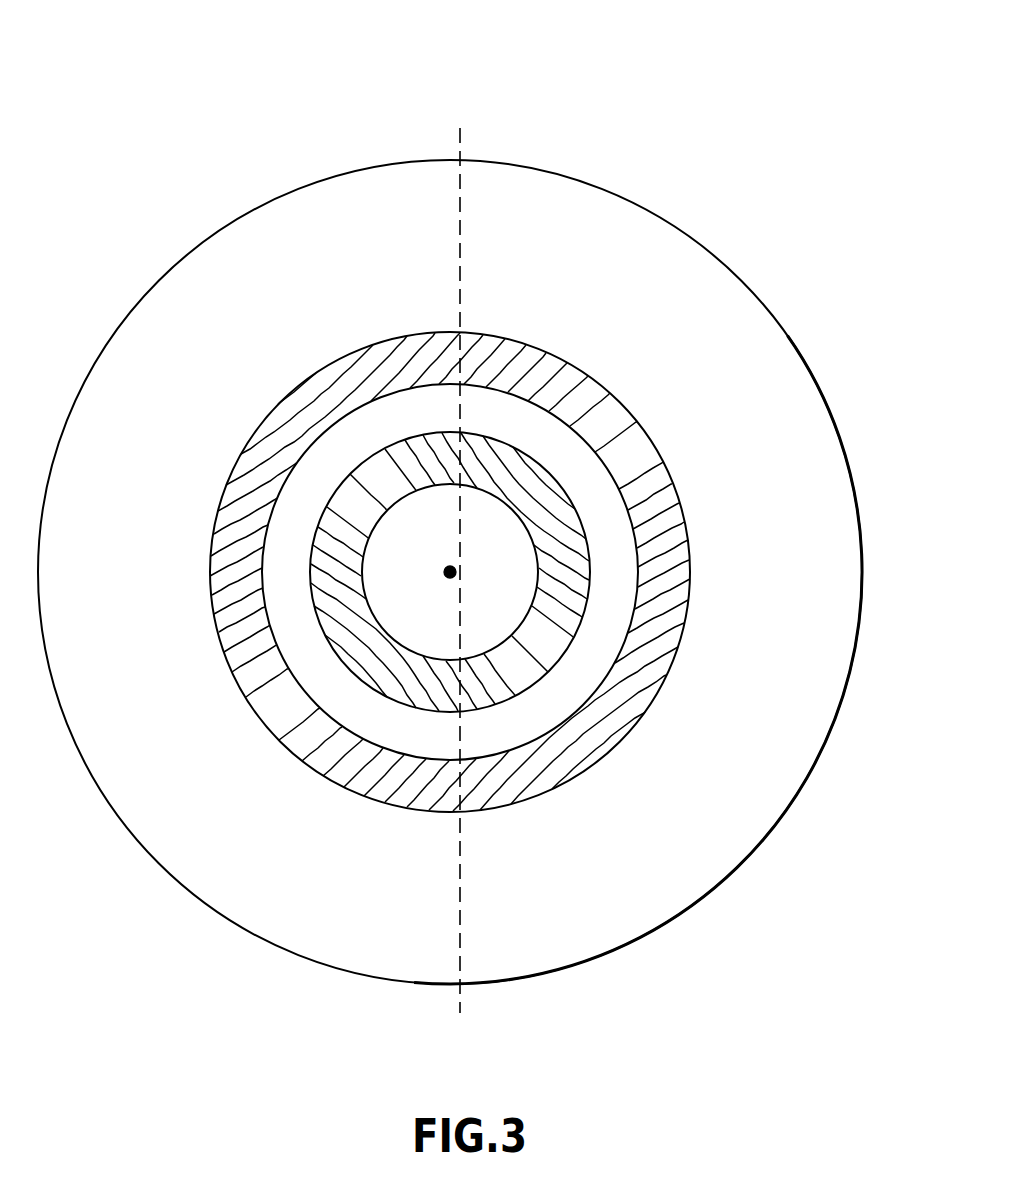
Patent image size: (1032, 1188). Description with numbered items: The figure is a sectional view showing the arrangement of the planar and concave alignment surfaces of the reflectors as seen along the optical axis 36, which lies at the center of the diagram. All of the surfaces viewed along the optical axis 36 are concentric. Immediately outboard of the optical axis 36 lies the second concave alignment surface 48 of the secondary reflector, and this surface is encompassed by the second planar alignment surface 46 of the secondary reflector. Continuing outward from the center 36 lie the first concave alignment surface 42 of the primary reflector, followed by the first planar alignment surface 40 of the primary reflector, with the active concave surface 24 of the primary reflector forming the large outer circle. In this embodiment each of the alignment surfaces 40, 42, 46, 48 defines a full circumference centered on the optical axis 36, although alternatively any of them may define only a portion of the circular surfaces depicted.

The active concave surface 24 is at (252, 253).
The optical axis 36 is at (443, 572).
The first planar alignment surface 40 is at (333, 760).
The first concave alignment surface 42 is at (552, 710).
The second planar alignment surface 46 is at (575, 513).
The second concave alignment surface 48 is at (468, 503).